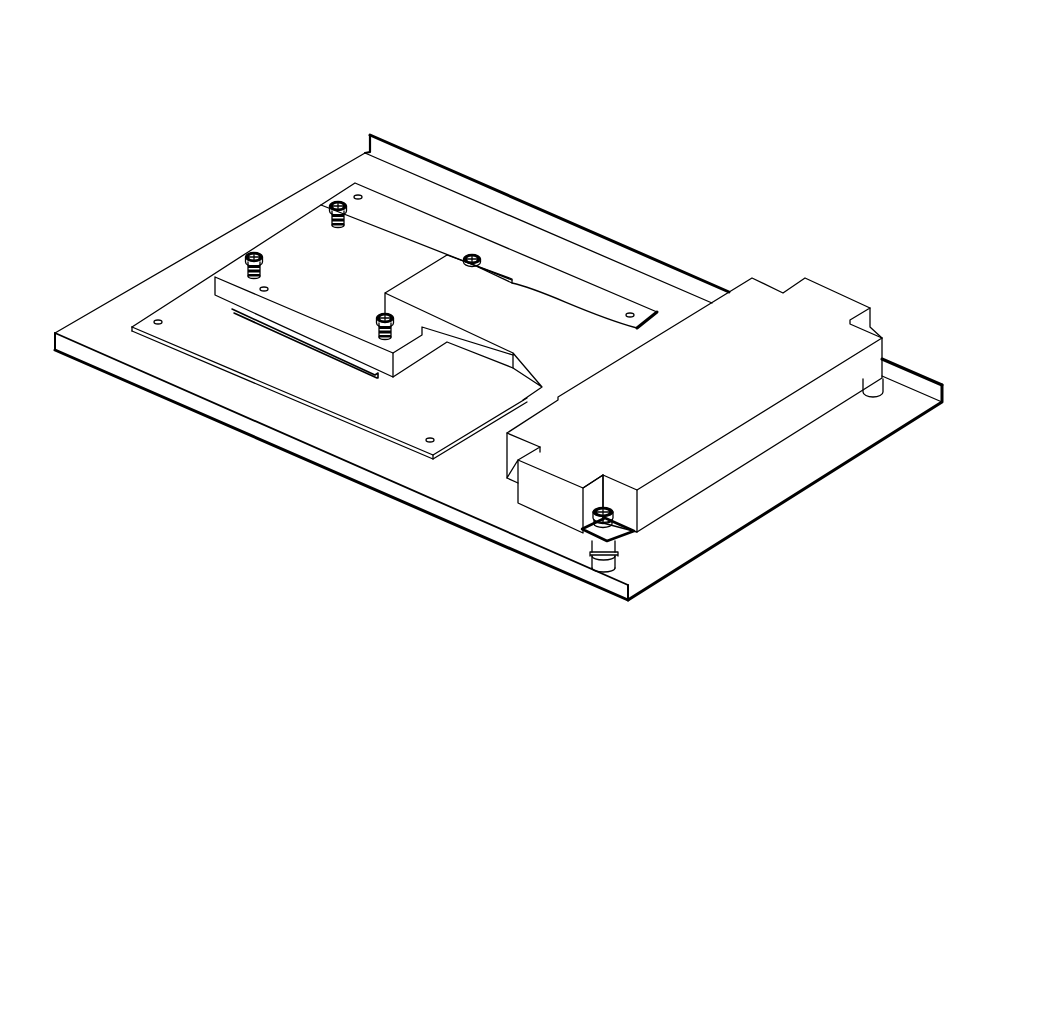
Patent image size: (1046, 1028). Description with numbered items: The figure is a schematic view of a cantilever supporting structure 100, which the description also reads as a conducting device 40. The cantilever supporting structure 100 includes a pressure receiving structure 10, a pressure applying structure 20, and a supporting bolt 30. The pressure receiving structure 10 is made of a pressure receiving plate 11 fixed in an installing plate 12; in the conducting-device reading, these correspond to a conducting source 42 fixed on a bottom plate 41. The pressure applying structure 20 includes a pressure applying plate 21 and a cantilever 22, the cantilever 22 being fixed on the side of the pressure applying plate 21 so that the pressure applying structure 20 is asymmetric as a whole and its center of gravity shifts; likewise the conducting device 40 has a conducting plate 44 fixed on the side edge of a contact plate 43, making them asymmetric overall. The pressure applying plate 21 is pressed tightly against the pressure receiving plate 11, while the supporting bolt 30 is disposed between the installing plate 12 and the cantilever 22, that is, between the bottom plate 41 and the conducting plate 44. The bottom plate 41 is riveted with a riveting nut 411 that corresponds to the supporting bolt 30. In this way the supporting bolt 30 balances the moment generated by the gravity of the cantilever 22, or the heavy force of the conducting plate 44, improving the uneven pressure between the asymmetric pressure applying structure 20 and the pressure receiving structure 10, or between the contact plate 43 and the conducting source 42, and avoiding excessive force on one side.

The cantilever supporting structure 100 is at (498, 508).
The conducting device 40 is at (610, 31).
The pressure receiving structure 10 is at (205, 436).
The pressure receiving plate 11 is at (305, 409).
The conducting source 42 is at (318, 348).
The installing plate 12 is at (341, 466).
The bottom plate 41 is at (410, 472).
The pressure applying structure 20 is at (832, 278).
The pressure applying plate 21 is at (391, 321).
The contact plate 43 is at (309, 235).
The cantilever 22 is at (694, 368).
The conducting plate 44 is at (758, 300).
The supporting bolt 30 is at (582, 530).
The riveting nut 411 is at (605, 572).